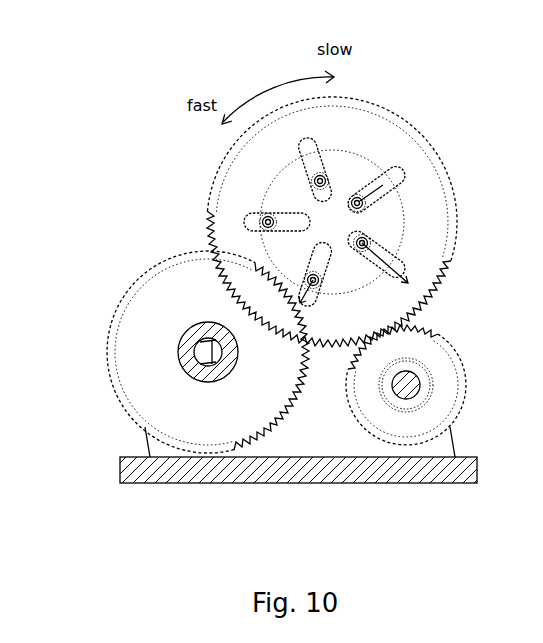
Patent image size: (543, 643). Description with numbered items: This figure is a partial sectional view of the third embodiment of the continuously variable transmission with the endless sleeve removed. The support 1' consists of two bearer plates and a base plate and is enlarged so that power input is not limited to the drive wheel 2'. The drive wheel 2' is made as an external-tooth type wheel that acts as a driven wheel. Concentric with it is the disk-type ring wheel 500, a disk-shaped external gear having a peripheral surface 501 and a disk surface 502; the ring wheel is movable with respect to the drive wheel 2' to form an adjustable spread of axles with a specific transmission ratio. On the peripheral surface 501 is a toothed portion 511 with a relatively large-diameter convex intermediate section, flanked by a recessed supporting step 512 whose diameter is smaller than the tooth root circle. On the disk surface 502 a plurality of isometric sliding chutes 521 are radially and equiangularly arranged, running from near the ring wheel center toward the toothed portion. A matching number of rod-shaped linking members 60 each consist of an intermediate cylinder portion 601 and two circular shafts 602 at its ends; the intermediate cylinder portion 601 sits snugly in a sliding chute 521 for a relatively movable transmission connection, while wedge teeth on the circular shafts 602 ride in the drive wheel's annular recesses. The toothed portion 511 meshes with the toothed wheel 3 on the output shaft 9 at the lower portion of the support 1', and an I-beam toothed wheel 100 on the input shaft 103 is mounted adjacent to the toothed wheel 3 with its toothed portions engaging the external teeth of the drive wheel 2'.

The disk-type ring wheel 500 is at (462, 182).
The peripheral surface 501 is at (453, 258).
The disk surface 502 is at (350, 127).
The toothed portion 511 is at (415, 312).
The supporting step 512 is at (215, 213).
The sliding chute 521 is at (413, 275).
The rod-shaped linking member 60 is at (383, 185).
The intermediate cylinder portion 601 is at (323, 173).
The circular shaft 602 is at (321, 180).
The drive wheel 2' is at (273, 196).
The I-beam toothed wheel 100 is at (167, 290).
The input shaft 103 is at (205, 348).
The output shaft 9 is at (432, 377).
The toothed wheel 3 is at (437, 405).
The support 1' is at (298, 485).